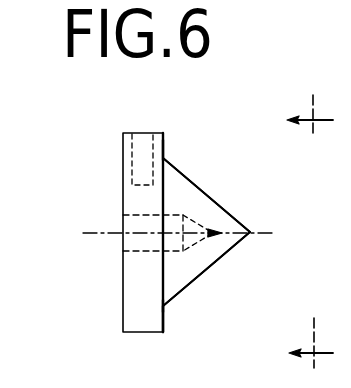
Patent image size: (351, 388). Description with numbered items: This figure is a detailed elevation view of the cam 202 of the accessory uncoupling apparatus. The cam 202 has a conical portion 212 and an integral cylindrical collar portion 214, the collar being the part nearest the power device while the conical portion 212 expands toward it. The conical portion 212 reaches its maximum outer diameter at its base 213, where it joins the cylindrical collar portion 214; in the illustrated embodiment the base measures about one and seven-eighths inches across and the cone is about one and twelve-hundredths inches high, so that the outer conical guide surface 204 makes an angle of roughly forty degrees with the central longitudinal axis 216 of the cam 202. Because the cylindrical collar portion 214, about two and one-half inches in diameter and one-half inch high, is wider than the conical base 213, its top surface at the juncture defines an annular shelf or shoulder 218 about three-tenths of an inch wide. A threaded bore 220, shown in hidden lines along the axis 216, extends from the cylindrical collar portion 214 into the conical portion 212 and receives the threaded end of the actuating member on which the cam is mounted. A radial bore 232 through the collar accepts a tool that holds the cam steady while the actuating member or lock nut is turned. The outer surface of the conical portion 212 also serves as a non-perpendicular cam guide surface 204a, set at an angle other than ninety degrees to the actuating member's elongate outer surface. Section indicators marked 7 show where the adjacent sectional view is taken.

The cam 202 is at (199, 198).
The outer conical guide surface 204 is at (226, 211).
The non-perpendicular cam guide surface 204a is at (202, 273).
The conical portion 212 is at (210, 255).
The base 213 is at (165, 306).
The cylindrical collar portion 214 is at (126, 270).
The central longitudinal axis 216 is at (83, 232).
The annular shelf or shoulder 218 is at (165, 148).
The threaded bore 220 is at (126, 222).
The radial bore 232 is at (142, 147).
The section line 7- 7 is at (310, 230).